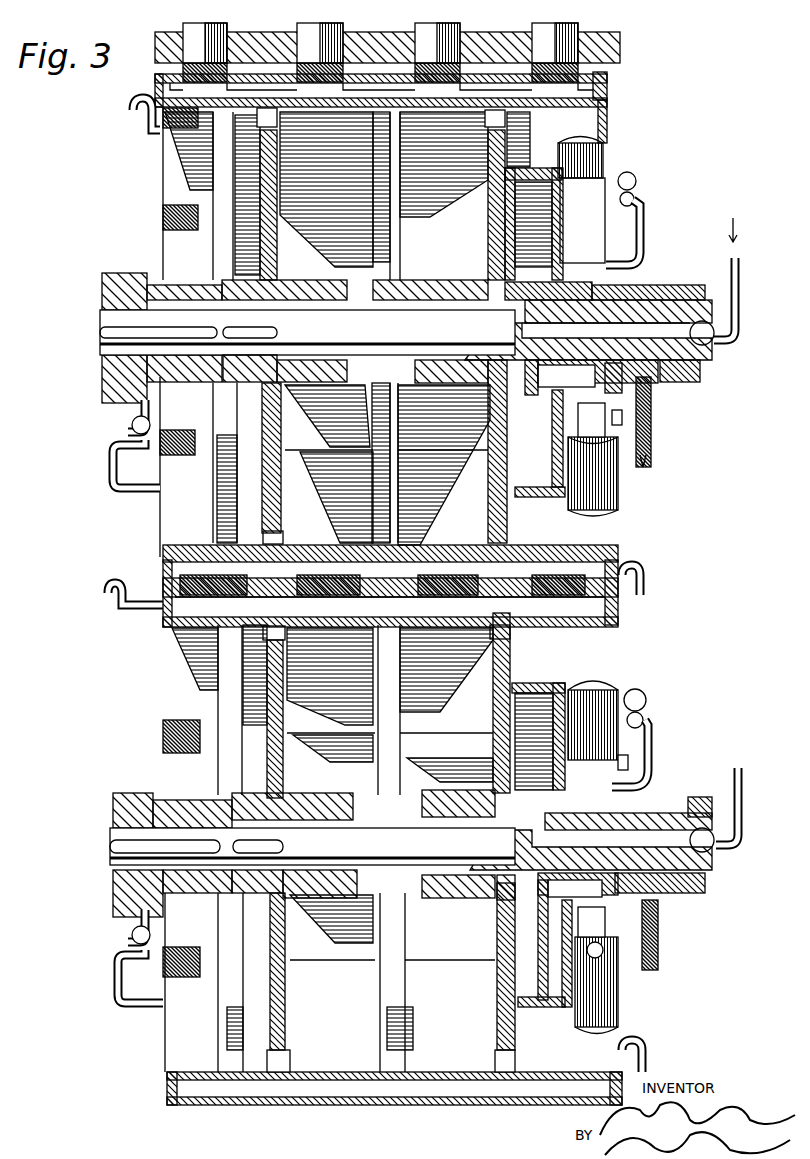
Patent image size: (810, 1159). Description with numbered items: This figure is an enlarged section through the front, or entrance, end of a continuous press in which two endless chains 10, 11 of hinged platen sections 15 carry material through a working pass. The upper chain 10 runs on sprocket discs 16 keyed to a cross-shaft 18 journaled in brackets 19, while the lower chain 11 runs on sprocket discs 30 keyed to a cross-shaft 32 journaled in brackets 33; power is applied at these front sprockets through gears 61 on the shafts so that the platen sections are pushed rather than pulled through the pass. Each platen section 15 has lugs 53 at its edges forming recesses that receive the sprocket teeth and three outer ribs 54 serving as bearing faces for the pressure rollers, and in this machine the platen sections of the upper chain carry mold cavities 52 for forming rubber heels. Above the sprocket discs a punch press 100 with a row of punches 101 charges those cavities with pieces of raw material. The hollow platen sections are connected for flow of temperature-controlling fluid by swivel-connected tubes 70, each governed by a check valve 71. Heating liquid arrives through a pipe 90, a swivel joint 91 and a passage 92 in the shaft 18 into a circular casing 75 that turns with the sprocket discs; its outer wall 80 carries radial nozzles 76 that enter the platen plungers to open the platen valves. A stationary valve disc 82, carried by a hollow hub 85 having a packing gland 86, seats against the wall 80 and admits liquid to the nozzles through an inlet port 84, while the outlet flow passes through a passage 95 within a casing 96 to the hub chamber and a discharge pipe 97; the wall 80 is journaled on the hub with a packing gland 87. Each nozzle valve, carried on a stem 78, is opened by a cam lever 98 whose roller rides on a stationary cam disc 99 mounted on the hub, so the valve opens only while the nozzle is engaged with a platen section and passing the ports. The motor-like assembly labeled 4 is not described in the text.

The punch press 100 is at (608, 45).
The punches 101 is at (205, 45).
The motor unit 4 is at (592, 67).
The platen sections 15 is at (608, 87).
The upper endless chain 10 is at (610, 118).
The sprocket discs 16 is at (260, 145).
The outer wall of casing 80 is at (592, 173).
The nozzles 76 is at (597, 200).
The valve stem 78 is at (602, 230).
The stationary cam disc 99 is at (618, 272).
The packing gland 86 is at (682, 293).
The pipe 90 is at (742, 280).
The swivel joint 91 is at (710, 333).
The passage 92 is at (698, 360).
The hollow hub 85 is at (662, 377).
The packing gland 87 is at (605, 392).
The discharge pipe 97 is at (652, 420).
The cam lever 98 is at (612, 413).
The circular casing 75 is at (578, 463).
The mold cavities 52 is at (183, 75).
The swivel-connected tubes 70 is at (133, 108).
The check valve 71 is at (128, 425).
The lugs 53 is at (257, 113).
The ribs 54 is at (220, 180).
The brackets 19 is at (293, 287).
The cross-shaft 18 is at (307, 332).
The stationary valve disc 82 is at (538, 227).
The inlet port 84 is at (522, 312).
The gears 61 is at (110, 380).
The passage 95 is at (545, 373).
The casing 96 is at (542, 390).
The brackets 33 is at (333, 782).
The cross-shaft 32 is at (312, 843).
The sprocket discs 30 is at (285, 1000).
The lower endless chain 11 is at (154, 1038).